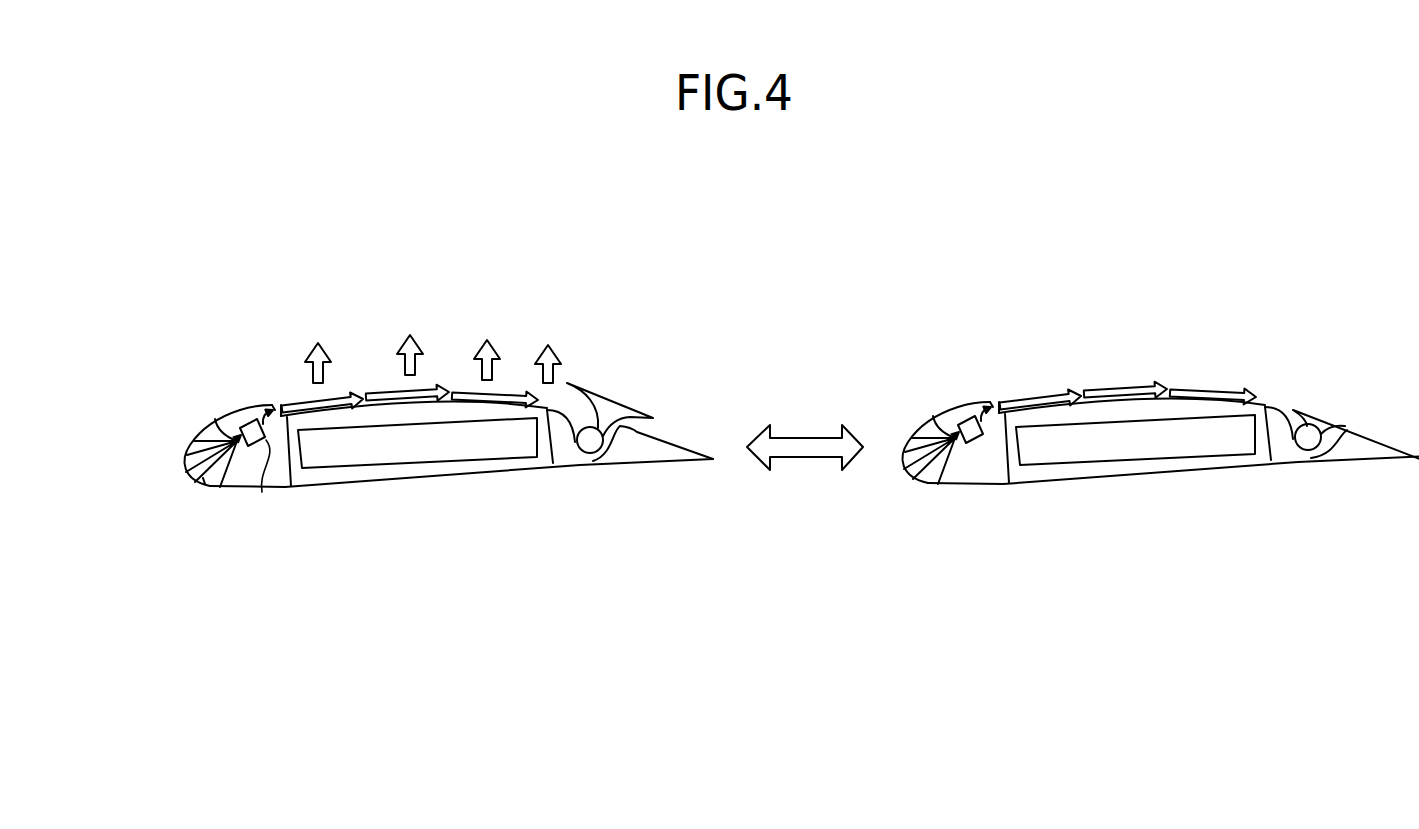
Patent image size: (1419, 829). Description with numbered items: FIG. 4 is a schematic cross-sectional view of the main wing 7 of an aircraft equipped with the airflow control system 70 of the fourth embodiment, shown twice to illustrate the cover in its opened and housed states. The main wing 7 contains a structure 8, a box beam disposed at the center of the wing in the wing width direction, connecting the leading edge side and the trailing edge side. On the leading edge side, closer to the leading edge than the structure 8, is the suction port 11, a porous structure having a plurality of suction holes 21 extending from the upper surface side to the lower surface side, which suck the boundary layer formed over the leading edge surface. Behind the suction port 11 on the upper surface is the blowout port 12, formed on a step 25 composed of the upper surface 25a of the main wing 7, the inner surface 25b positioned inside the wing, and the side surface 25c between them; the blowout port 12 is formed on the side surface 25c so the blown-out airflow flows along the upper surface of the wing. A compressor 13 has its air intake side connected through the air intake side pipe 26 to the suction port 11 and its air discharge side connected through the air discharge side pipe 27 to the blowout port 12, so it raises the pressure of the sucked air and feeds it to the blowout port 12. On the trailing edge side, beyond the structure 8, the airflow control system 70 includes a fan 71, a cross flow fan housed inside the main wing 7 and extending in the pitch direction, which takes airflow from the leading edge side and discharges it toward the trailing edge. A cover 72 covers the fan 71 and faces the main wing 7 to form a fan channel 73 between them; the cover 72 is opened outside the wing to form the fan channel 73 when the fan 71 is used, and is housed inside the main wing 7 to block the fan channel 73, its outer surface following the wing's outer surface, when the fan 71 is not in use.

The main wing 7 is at (408, 368).
The structure 8 is at (396, 472).
The suction port 11 is at (192, 443).
The blowout port 12 is at (271, 405).
The compressor 13 is at (233, 416).
The suction holes 21 is at (186, 467).
The step 25 is at (355, 417).
The upper surface 25a is at (250, 407).
The inner surface 25b is at (303, 406).
The side surface 25c is at (274, 412).
The air intake side pipe 26 is at (205, 484).
The air discharge side pipe 27 is at (264, 481).
The airflow control system 70 is at (640, 414).
The fan 71 is at (590, 452).
The cover 72 is at (596, 398).
The fan channel 73 is at (623, 428).